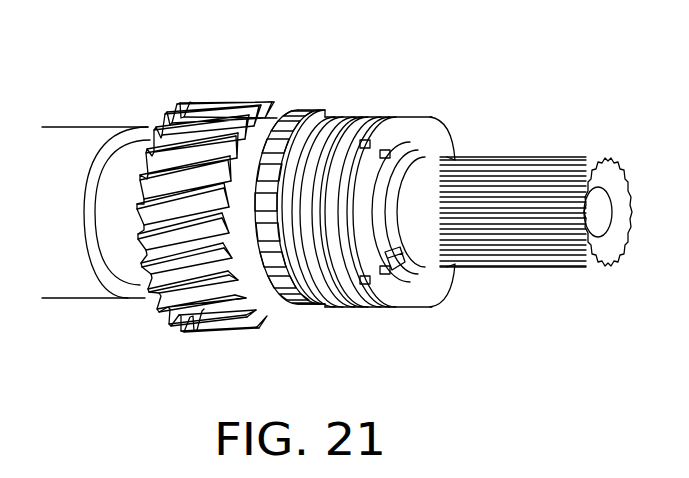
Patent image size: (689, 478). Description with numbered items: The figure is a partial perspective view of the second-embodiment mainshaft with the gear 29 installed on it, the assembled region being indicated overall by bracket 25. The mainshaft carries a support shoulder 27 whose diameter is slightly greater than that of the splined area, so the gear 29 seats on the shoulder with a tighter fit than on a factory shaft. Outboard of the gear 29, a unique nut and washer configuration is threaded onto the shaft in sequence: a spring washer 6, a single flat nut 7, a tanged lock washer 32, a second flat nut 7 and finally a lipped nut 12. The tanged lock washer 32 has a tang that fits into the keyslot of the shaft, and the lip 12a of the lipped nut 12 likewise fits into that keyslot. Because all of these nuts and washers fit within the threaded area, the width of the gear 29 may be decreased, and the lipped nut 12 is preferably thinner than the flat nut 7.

The gear shaft assembly 25 is at (625, 97).
The support shoulder 27 is at (148, 147).
The gear 29 is at (342, 330).
The spring washer 6 is at (320, 117).
The tanged lock washer 32 is at (358, 120).
The flat nut 7 is at (335, 297).
The lipped nut 12 is at (405, 295).
The lip 12a is at (412, 277).